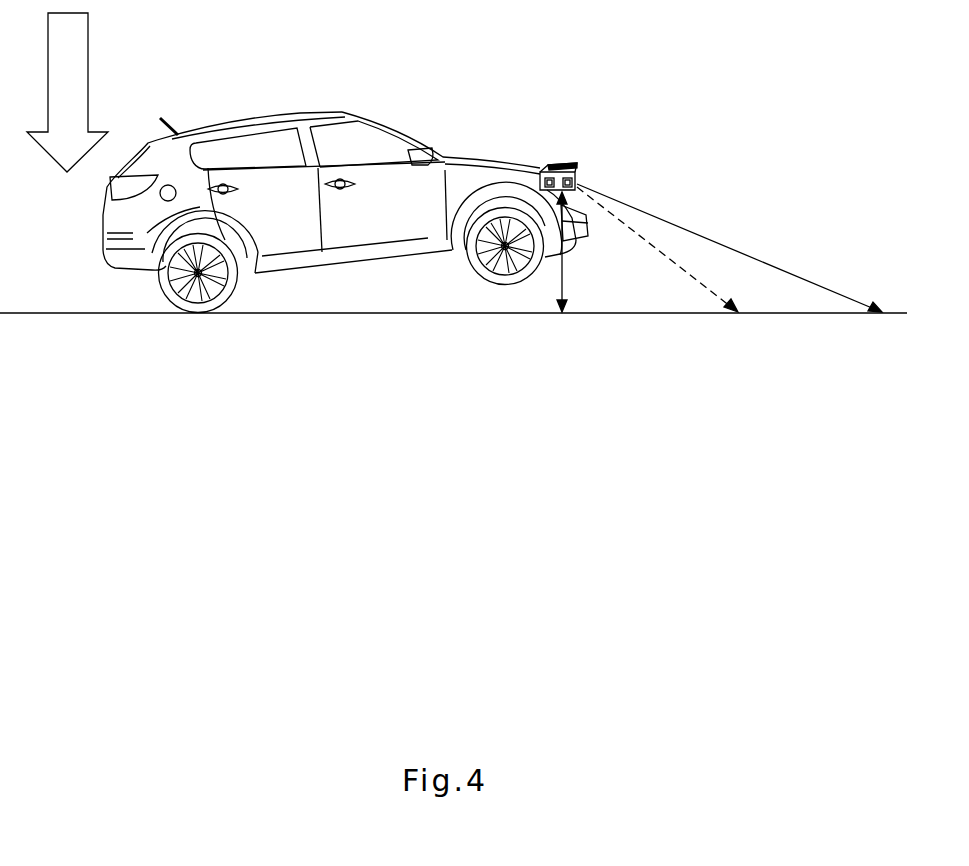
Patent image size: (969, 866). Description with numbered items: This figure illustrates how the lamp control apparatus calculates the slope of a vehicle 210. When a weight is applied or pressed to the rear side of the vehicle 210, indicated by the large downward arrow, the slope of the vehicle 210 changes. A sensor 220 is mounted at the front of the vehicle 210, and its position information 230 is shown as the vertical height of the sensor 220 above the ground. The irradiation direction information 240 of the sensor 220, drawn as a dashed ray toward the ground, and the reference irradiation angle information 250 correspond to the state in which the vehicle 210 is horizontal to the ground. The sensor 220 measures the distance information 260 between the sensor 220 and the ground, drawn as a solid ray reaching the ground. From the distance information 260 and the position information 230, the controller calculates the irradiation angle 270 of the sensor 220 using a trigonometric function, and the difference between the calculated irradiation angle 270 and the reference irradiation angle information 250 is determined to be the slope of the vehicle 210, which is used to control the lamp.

The vehicle 210 is at (285, 115).
The sensor 220 is at (560, 167).
The position information 230 is at (556, 255).
The irradiation direction information 240 is at (667, 256).
The reference irradiation angle information 250 is at (586, 248).
The distance information 260 is at (693, 236).
The irradiation angle 270 is at (618, 215).